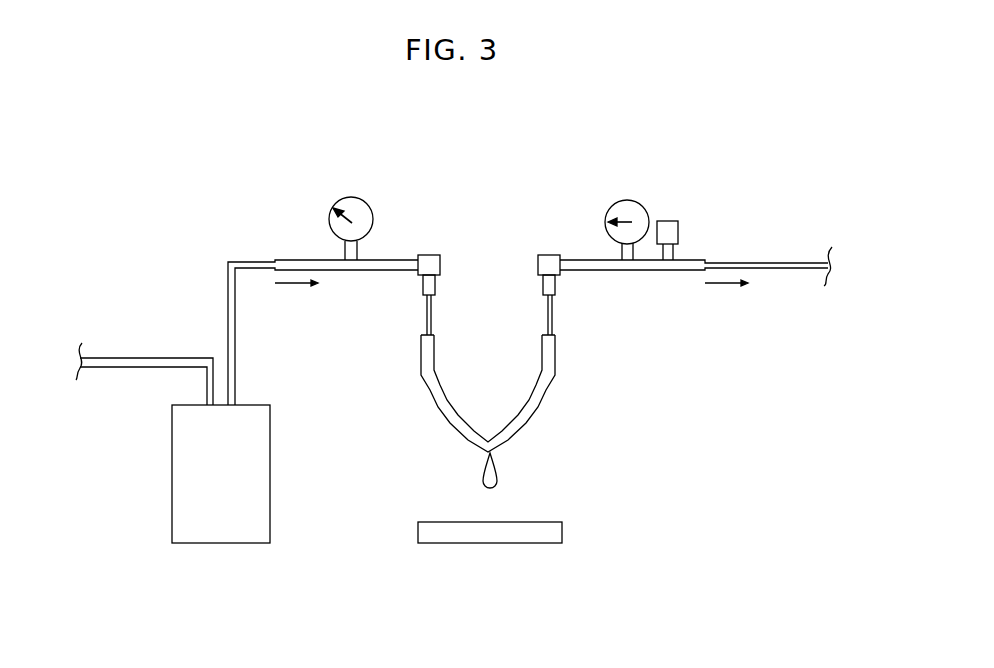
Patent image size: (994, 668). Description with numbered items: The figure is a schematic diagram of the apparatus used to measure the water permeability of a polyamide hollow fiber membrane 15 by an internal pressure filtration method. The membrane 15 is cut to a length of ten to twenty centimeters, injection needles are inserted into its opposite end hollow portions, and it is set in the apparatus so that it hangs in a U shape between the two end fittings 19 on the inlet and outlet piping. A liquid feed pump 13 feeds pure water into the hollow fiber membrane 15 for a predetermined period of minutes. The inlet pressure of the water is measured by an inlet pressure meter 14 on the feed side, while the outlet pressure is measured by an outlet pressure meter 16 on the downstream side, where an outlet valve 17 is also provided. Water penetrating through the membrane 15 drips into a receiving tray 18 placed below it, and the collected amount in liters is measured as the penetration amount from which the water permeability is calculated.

The liquid feed pump 13 is at (180, 505).
The inlet pressure meter 14 is at (368, 206).
The polyamide hollow fiber membrane 15 is at (550, 386).
The outlet pressure meter 16 is at (628, 205).
The outlet valve 17 is at (676, 222).
The receiving tray 18 is at (525, 522).
The connector 19 is at (427, 310).